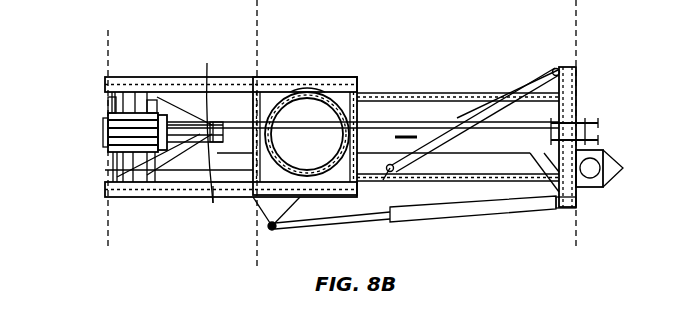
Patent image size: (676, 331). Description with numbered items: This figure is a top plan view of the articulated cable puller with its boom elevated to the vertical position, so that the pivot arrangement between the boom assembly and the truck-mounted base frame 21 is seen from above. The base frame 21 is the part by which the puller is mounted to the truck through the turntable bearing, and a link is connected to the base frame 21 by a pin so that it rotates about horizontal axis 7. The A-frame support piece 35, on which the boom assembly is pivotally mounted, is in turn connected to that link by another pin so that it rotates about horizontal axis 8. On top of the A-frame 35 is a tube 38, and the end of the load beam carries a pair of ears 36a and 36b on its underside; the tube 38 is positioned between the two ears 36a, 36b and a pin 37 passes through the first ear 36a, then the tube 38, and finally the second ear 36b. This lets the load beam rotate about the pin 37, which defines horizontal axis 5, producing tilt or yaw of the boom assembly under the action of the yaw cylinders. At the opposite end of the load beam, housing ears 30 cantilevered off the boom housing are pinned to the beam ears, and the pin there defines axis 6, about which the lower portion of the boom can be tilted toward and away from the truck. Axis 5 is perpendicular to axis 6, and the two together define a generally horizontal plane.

The horizontal axis 5 is at (100, 137).
The axis defined by pin 32 6 is at (574, 229).
The horizontal axis 7 is at (256, 237).
The horizontal axis 8 is at (107, 215).
The base frame 21 is at (328, 82).
The housing ears 30 is at (623, 168).
The A-frame support piece 35 is at (113, 165).
The first ear 36a is at (103, 122).
The second ear 36b is at (189, 204).
The pin 37 is at (103, 139).
The tube 38 is at (207, 63).